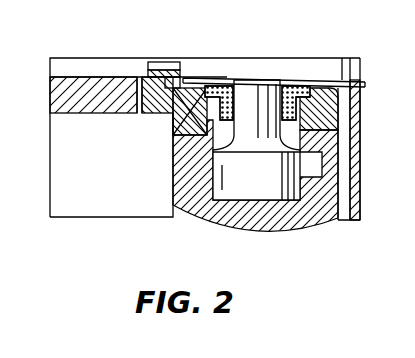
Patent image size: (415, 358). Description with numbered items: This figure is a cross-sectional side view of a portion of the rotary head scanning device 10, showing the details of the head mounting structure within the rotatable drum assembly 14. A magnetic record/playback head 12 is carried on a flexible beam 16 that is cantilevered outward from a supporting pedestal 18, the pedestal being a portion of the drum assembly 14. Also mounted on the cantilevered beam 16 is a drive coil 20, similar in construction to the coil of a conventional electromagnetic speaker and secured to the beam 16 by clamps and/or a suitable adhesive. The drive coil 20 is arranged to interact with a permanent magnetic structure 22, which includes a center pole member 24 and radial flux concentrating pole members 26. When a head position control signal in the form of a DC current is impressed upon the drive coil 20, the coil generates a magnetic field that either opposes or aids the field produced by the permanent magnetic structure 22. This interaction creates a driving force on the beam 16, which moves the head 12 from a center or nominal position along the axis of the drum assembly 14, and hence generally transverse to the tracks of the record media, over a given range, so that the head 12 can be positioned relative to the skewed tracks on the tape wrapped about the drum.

The rotary head scanning device 10 is at (95, 44).
The magnetic record/playback head 12 is at (362, 84).
The rotatable drum assembly 14 is at (352, 168).
The flexible beam 16 is at (287, 80).
The supporting pedestal 18 is at (136, 58).
The drive coil 20 is at (209, 78).
The permanent magnetic structure 22 is at (268, 237).
The center pole member 24 is at (254, 98).
The radial flux concentrating pole members 26 is at (323, 103).